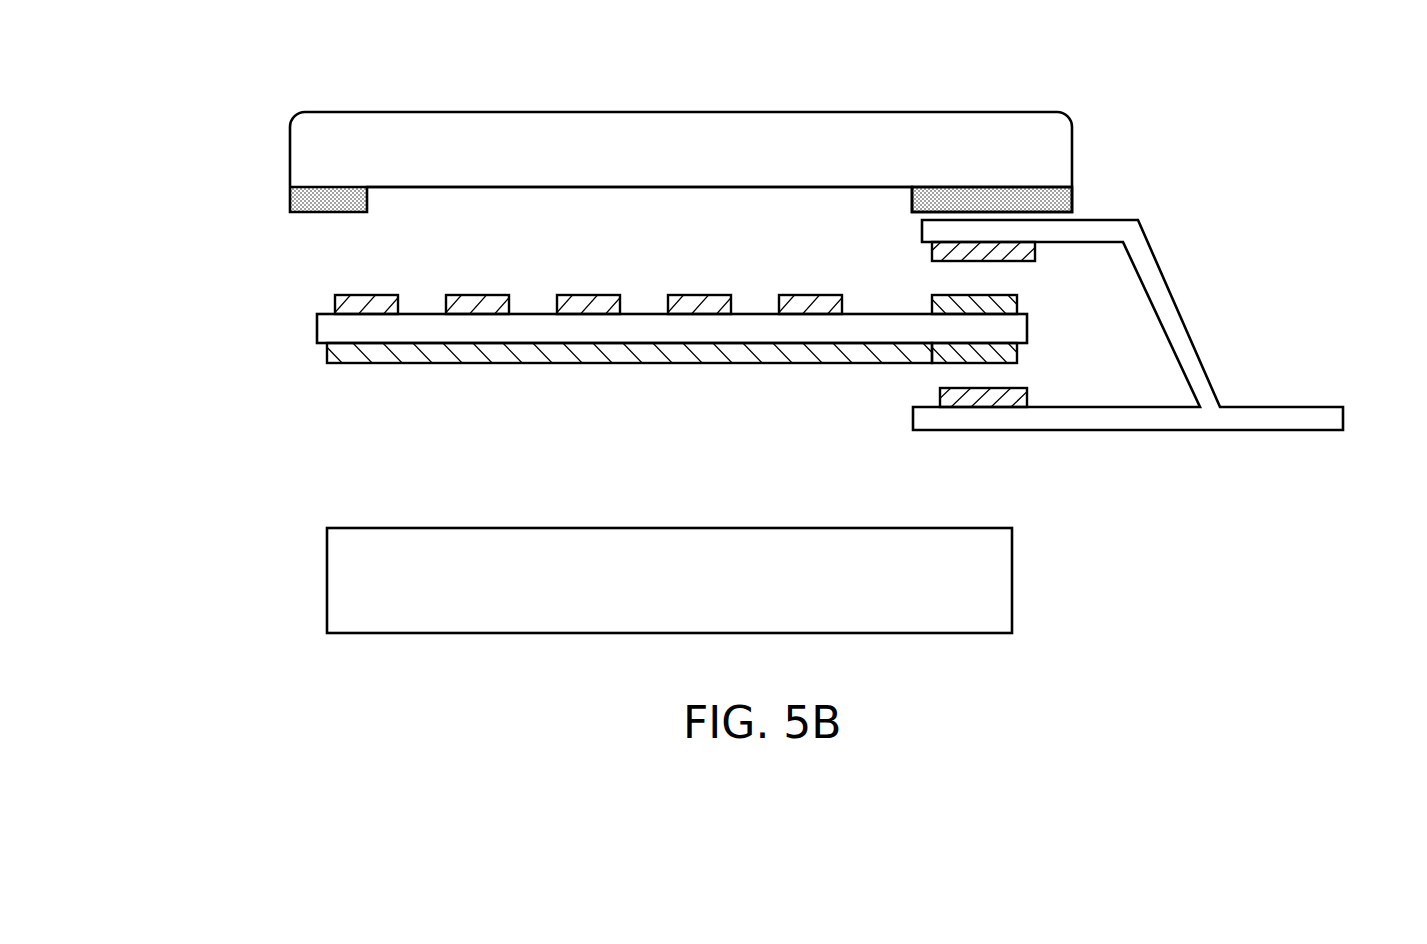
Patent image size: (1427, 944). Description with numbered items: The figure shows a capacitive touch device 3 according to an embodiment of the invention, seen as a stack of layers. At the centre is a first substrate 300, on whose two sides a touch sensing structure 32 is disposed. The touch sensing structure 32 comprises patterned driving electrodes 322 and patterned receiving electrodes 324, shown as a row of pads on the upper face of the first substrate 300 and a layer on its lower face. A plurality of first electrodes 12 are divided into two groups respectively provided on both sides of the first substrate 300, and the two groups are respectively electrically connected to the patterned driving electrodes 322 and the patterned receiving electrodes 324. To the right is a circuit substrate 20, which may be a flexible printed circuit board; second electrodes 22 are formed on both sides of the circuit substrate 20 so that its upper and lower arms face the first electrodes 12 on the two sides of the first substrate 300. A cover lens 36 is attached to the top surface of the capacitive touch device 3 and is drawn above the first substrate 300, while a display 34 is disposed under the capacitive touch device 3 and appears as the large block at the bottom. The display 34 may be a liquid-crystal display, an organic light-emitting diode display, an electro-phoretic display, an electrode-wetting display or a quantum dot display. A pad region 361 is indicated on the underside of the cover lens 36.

The capacitive touch device 3 is at (1296, 228).
The first electrodes 12 is at (1018, 305).
The circuit substrate 20 is at (1164, 294).
The second electrodes 22 is at (932, 252).
The touch sensing structure 32 is at (555, 330).
The display 34 is at (1005, 580).
The cover lens 36 is at (678, 125).
The first substrate 300 is at (755, 328).
The patterned driving electrodes 322 is at (343, 352).
The patterned receiving electrodes 324 is at (343, 305).
The cover contact pad 361 is at (990, 196).